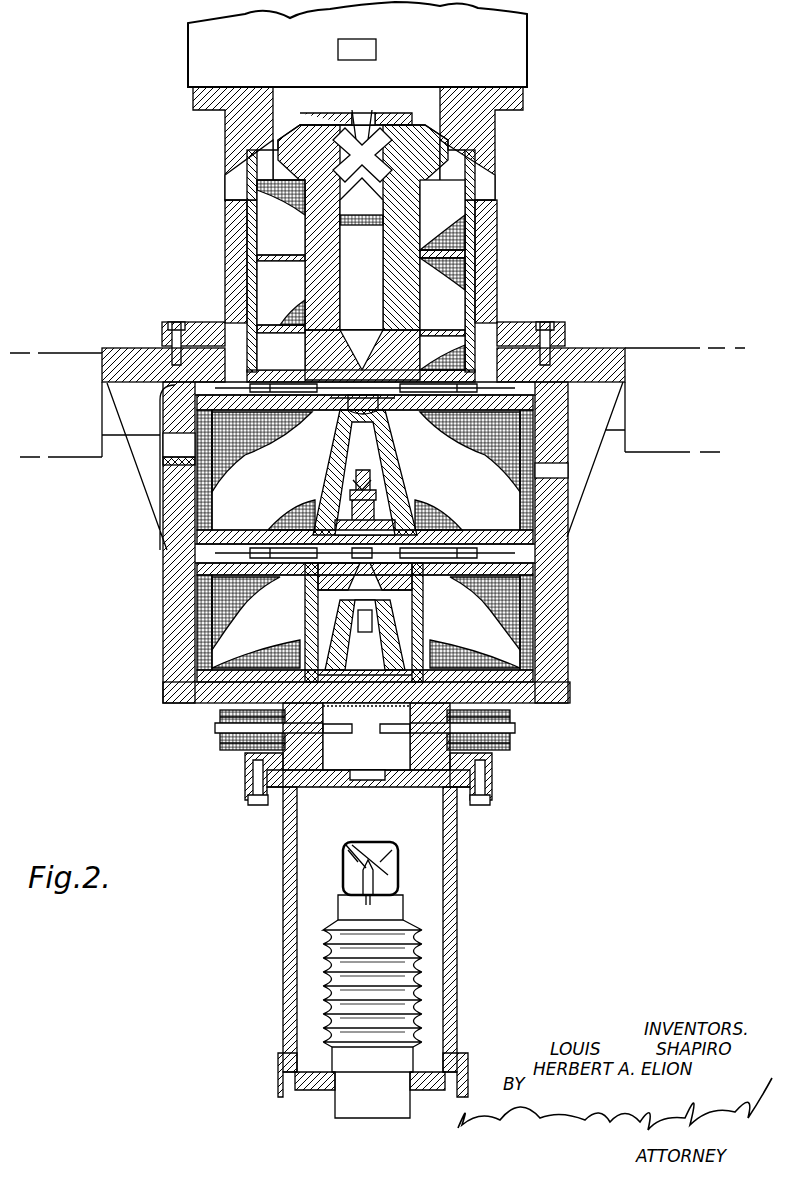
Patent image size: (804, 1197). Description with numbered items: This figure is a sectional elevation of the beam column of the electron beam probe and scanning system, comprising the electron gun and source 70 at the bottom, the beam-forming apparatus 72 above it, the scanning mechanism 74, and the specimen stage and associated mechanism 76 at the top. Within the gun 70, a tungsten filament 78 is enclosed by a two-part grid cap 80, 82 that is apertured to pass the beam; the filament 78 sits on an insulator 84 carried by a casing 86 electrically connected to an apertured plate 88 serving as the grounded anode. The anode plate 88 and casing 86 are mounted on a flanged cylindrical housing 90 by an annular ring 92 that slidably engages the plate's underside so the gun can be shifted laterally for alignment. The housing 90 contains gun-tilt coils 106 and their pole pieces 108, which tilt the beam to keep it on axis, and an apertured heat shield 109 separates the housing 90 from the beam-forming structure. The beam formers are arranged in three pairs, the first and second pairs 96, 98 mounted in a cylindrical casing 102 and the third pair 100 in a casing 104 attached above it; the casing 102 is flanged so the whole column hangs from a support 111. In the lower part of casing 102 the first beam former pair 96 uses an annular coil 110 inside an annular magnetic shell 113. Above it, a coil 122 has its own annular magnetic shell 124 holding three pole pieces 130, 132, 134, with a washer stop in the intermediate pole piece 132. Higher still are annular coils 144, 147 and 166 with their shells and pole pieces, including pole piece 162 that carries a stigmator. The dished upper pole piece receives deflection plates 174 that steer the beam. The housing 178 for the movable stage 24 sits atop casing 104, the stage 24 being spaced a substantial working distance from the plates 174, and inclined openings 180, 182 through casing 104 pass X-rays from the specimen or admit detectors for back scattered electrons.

The movable stage 24 is at (378, 50).
The electron gun and source 70 is at (132, 825).
The beam-forming apparatus 72 is at (64, 194).
The scanning mechanism 74 is at (66, 120).
The specimen stage and associated mechanism 76 is at (66, 67).
The tungsten filament 78 is at (378, 882).
The grid cap part 80 is at (356, 862).
The grid cap part 82 is at (345, 850).
The insulator 84 is at (325, 967).
The casing 86 is at (284, 934).
The apertured plate 88 is at (420, 787).
The flanged cylindrical housing 90 is at (244, 760).
The annular ring 92 is at (245, 790).
The first pair of beam formers 96 is at (121, 606).
The second pair of beam formers 98 is at (113, 490).
The third pair of beam formers 100 is at (135, 271).
The cylindrical casing 102 is at (165, 568).
The cylindrical casing 104 is at (225, 250).
The gun-tilt coils 106 is at (226, 747).
The pole pieces 108 is at (372, 740).
The apertured heat shield 109 is at (386, 695).
The annular coil 110 is at (262, 630).
The support 111 is at (125, 410).
The annular magnetic shell 113 is at (560, 602).
The coil 122 is at (278, 477).
The annular magnetic shell 124 is at (272, 523).
The pole piece 130 is at (418, 500).
The intermediate pole piece 132 is at (404, 457).
The pole piece 134 is at (395, 415).
The annular coil 144 is at (300, 361).
The annular coil 147 is at (292, 301).
The pole piece 162 is at (341, 238).
The annular coil 166 is at (292, 222).
The deflection plates 174 is at (366, 120).
The housing 178 is at (210, 66).
The opening 180 is at (235, 157).
The opening 182 is at (478, 152).